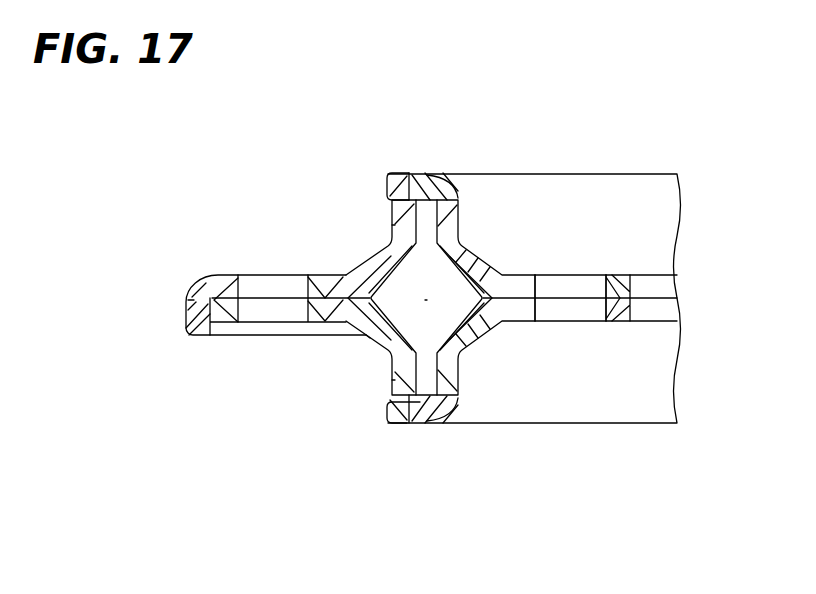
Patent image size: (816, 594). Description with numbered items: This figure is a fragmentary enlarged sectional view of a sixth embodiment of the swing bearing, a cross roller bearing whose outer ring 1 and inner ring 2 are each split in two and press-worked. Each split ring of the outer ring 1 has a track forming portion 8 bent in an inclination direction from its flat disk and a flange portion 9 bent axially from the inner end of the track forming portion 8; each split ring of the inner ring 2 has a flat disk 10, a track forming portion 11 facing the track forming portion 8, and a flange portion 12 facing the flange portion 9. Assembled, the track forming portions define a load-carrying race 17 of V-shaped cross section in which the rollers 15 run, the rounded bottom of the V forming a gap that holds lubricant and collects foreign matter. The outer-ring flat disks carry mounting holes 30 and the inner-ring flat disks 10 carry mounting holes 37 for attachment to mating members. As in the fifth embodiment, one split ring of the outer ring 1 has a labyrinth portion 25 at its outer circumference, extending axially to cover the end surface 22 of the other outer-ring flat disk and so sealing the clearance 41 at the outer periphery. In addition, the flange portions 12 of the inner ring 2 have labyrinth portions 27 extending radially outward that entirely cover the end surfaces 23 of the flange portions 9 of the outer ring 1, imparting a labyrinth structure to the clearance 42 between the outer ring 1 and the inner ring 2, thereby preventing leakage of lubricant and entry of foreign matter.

The outer ring 1 is at (338, 273).
The inner ring 2 is at (479, 241).
The track forming portion 8 is at (390, 338).
The flange portion 9 is at (400, 225).
The flat disk 10 is at (520, 277).
The track forming portion 11 is at (470, 262).
The flange portion 12 is at (448, 220).
The roller 15 is at (440, 315).
The load-carrying race 17 is at (372, 342).
The end surface 22 is at (210, 304).
The end surface 23 is at (398, 197).
The labyrinth portion 25 is at (198, 300).
The labyrinth portion 27 is at (405, 200).
The mounting hole 30 is at (252, 327).
The mounting hole 37 is at (548, 300).
The clearance 41 is at (212, 323).
The clearance 42 is at (408, 200).